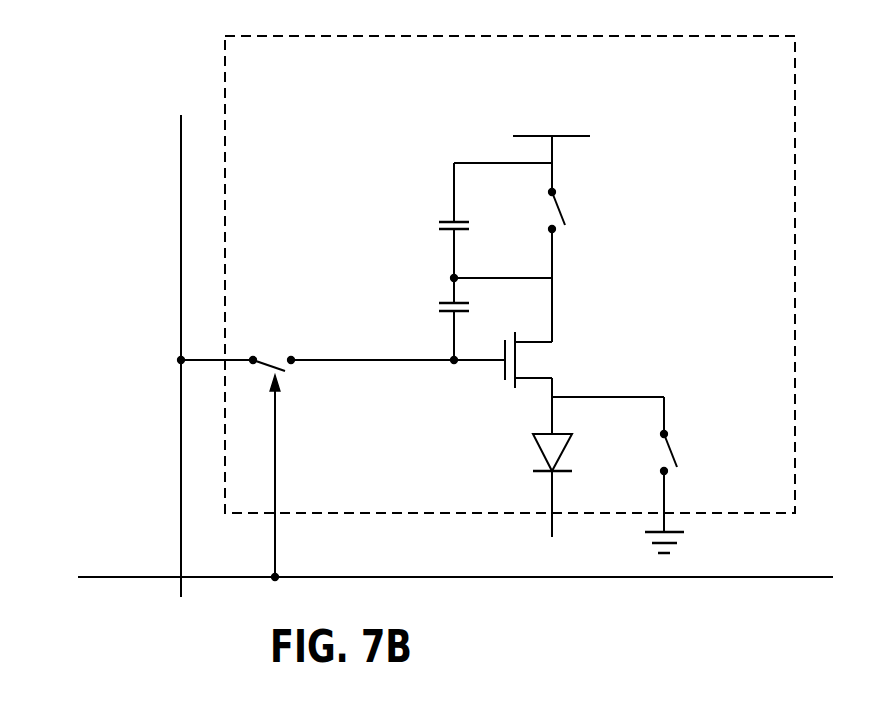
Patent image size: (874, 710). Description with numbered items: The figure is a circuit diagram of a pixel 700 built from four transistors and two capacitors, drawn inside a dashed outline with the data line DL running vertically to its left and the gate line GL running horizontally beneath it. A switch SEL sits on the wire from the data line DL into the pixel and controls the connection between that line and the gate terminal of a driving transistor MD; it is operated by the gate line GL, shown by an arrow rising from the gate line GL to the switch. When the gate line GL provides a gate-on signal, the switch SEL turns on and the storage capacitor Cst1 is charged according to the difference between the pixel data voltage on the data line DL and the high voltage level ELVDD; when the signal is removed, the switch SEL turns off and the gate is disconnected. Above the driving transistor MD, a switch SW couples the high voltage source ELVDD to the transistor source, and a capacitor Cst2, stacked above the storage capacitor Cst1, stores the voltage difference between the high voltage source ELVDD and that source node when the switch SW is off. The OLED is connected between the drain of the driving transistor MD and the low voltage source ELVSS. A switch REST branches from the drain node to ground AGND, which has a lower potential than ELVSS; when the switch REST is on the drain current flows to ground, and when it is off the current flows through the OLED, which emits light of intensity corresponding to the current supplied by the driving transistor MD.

The pixel 700 is at (286, 94).
The data line DL is at (181, 340).
The gate line GL is at (435, 579).
The switch SEL is at (342, 450).
The switch SW is at (589, 266).
The storage capacitor Cst1 is at (476, 318).
The capacitor Cst2 is at (434, 220).
The driving transistor MD is at (584, 383).
The element OLED is at (507, 473).
The switch REST is at (711, 455).
The high voltage source ELVDD is at (522, 151).
The low voltage source ELVSS is at (548, 537).
The ground AGND is at (692, 537).